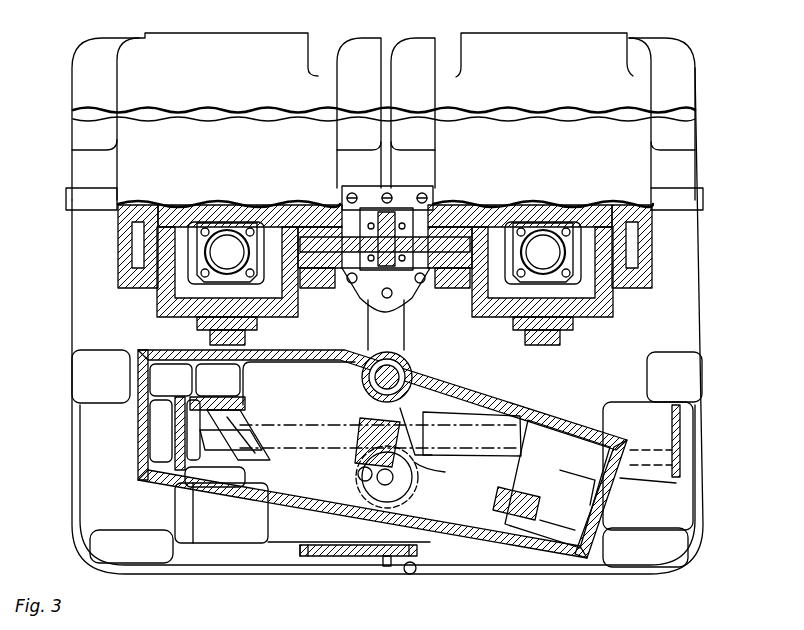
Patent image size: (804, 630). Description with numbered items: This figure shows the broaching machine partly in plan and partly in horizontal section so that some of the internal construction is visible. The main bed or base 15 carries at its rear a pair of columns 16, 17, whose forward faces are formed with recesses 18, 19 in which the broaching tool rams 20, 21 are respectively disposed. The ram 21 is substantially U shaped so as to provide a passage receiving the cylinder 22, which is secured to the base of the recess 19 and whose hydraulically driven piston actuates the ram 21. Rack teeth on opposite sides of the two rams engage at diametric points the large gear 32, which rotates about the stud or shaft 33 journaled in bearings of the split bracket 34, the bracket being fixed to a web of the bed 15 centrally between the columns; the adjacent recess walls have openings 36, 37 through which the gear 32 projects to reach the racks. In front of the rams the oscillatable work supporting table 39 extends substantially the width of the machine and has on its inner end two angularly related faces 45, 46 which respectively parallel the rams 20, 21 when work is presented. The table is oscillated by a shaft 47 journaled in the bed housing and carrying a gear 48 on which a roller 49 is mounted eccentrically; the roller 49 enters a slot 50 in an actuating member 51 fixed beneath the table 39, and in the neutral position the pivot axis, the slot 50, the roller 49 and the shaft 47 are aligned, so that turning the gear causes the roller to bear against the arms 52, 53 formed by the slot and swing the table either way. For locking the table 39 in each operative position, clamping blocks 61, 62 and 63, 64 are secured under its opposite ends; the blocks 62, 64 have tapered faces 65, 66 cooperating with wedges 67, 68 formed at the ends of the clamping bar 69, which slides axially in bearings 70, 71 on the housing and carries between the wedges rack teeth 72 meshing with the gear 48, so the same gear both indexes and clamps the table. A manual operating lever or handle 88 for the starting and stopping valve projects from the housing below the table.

The main bed or base 15 is at (700, 322).
The column 16 is at (74, 75).
The column 17 is at (686, 76).
The recess 18 is at (160, 238).
The recess 19 is at (630, 248).
The broaching tool ram 20 is at (150, 252).
The broaching tool ram 21 is at (620, 257).
The cylinder 22 is at (552, 226).
The large gear 32 is at (342, 283).
The stud or shaft 33 is at (402, 197).
The split bracket 34 is at (357, 292).
The opening 36 is at (320, 206).
The opening 37 is at (444, 204).
The work supporting table 39 is at (590, 560).
The face 45 is at (326, 352).
The face 46 is at (565, 400).
The shaft 47 is at (372, 520).
The gear 48 is at (410, 496).
The roller 49 is at (358, 480).
The slot 50 is at (394, 480).
The actuating member 51 is at (404, 440).
The arm 52 is at (360, 462).
The arm 53 is at (435, 469).
The clamping block 61 is at (200, 412).
The clamping block 62 is at (210, 488).
The clamping block 63 is at (600, 495).
The clamping block 64 is at (496, 505).
The tapered face 65 is at (224, 488).
The tapered face 66 is at (585, 540).
The wedge 67 is at (248, 420).
The wedge 68 is at (448, 440).
The clamping bar 69 is at (292, 423).
The bearing 70 is at (310, 445).
The bearing 71 is at (500, 418).
The rack teeth 72 is at (420, 385).
The manual operating lever or handle 88 is at (412, 575).